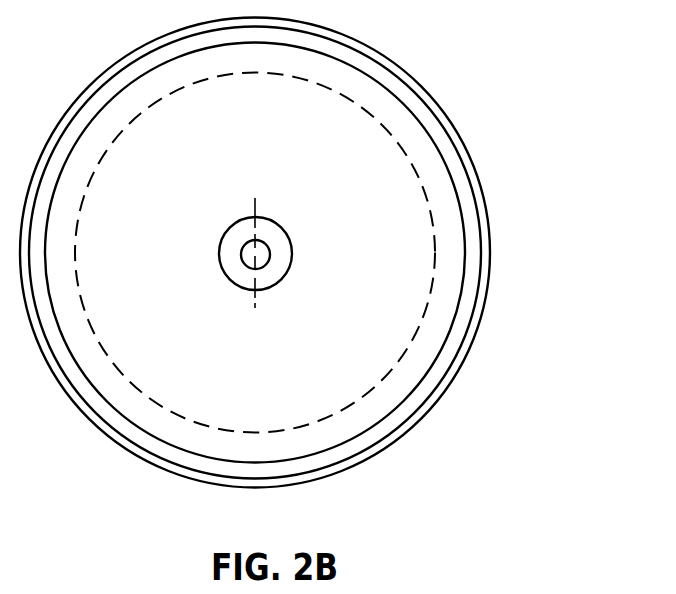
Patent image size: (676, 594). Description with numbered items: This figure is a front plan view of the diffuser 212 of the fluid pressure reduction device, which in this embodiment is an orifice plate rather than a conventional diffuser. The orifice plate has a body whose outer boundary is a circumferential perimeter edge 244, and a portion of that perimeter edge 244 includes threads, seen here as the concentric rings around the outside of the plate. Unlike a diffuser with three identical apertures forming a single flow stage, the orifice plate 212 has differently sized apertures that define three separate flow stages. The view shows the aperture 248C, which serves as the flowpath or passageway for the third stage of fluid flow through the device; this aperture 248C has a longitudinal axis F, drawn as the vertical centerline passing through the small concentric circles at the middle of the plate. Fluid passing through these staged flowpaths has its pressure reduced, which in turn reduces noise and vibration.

The diffuser 212 is at (435, 83).
The perimeter edge 244 is at (480, 180).
The aperture 248C is at (342, 315).
The longitudinal axis F is at (255, 267).